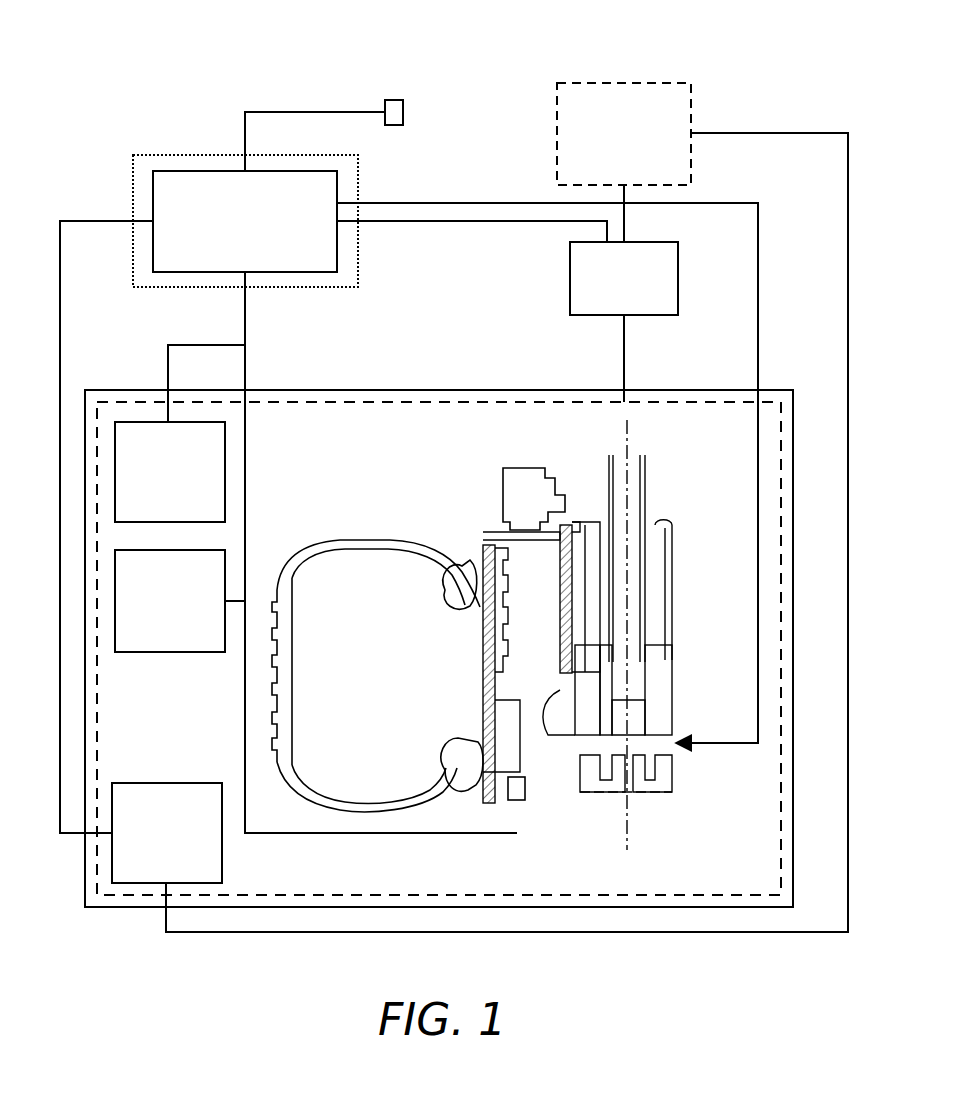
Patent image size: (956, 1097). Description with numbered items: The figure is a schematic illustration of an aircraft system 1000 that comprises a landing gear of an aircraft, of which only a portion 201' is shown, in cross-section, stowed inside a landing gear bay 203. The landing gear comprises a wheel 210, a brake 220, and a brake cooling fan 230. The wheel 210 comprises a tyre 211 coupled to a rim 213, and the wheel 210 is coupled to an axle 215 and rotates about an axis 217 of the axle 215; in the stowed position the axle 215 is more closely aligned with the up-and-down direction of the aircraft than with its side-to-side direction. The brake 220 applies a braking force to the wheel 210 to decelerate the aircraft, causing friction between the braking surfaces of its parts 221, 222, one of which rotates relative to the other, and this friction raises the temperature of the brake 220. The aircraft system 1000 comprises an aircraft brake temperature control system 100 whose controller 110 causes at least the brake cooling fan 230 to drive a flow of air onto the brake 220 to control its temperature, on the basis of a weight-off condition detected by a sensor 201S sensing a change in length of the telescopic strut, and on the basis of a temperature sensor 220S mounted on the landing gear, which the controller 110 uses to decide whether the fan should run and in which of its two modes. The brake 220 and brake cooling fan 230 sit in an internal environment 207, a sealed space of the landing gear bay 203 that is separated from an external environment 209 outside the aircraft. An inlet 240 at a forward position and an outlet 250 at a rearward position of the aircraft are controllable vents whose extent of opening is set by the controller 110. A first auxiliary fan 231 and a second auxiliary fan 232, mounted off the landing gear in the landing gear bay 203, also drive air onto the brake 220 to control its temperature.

The aircraft system 1000 is at (220, 92).
The aircraft brake temperature control system 100 is at (126, 172).
The controller 110 is at (245, 221).
The sensor 201S is at (405, 105).
The external environment 209 is at (624, 134).
The inlet 240 is at (624, 278).
The landing gear bay 203 is at (675, 390).
The internal environment 207 is at (505, 402).
The first auxiliary fan 231 is at (170, 472).
The second auxiliary fan 232 is at (170, 601).
The outlet 250 is at (167, 833).
The portion of the landing gear 201' is at (510, 642).
The wheel 210 is at (330, 662).
The tyre 211 is at (300, 785).
The rim 213 is at (480, 735).
The brake 220 is at (556, 642).
The brake part 221 is at (505, 487).
The brake part 222 is at (500, 540).
The axle 215 is at (640, 487).
The brake cooling fan 230 is at (680, 752).
The axis 217 is at (630, 843).
The temperature sensor 220S is at (522, 802).